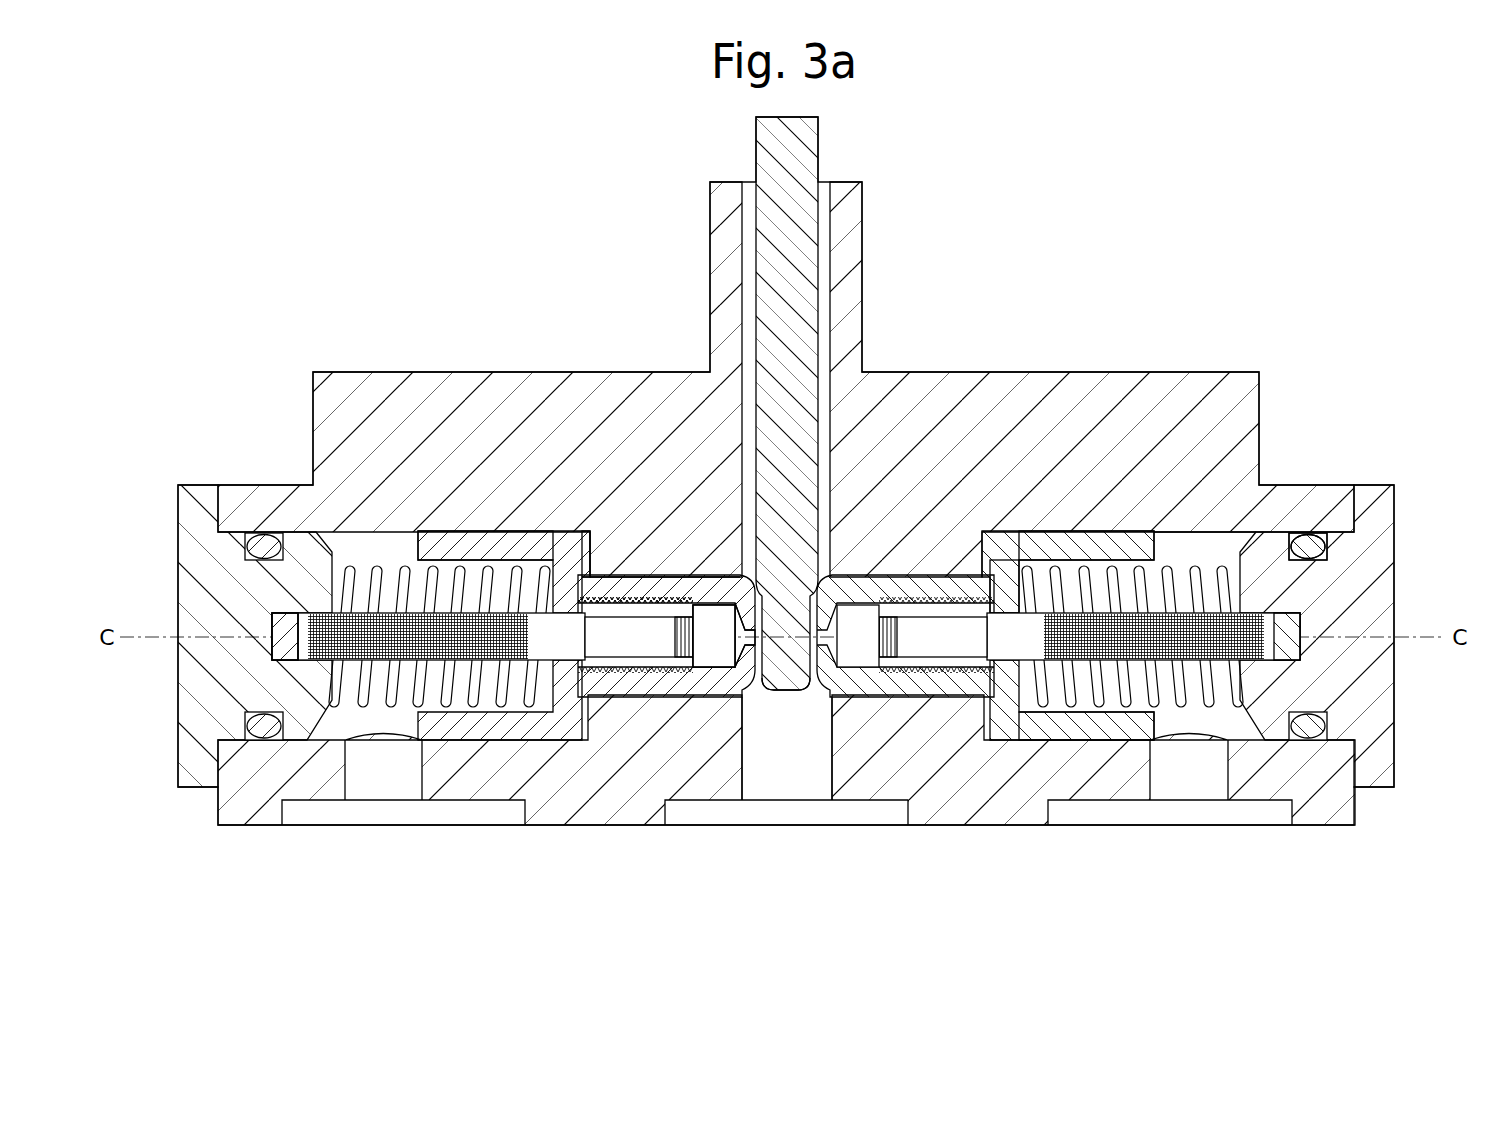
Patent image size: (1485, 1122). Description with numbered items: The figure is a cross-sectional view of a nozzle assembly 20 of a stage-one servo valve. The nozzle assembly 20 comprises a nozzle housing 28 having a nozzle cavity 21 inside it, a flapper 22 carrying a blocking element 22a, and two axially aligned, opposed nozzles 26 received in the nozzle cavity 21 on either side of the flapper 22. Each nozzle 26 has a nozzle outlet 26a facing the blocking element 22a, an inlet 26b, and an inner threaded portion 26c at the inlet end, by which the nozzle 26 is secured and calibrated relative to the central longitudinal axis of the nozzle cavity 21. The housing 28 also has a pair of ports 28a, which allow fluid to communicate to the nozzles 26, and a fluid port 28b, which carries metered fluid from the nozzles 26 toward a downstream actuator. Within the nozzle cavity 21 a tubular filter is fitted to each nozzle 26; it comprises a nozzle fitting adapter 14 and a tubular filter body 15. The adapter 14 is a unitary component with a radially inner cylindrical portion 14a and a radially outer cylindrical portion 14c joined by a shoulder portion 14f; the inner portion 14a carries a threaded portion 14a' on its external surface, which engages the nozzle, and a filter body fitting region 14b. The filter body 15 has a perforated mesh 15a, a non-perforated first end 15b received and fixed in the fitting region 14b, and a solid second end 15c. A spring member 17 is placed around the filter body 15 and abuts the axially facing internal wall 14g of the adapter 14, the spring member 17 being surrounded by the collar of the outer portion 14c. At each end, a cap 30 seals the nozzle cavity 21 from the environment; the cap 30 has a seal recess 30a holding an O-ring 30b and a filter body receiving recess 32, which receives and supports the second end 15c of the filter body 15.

The nozzle assembly 20 is at (243, 310).
The flapper 22 is at (780, 220).
The blocking element 22a is at (778, 660).
The nozzle housing 28 is at (1075, 385).
The ports 28a is at (400, 790).
The fluid port 28b is at (812, 790).
The nozzle cavity 21 is at (1215, 545).
The cap 30 is at (1360, 610).
The seal recess 30a is at (1345, 535).
The O-ring 30b is at (1303, 540).
The filter body receiving recess 32 is at (1300, 648).
The nozzle fitting adapter 14 is at (472, 526).
The radially inner cylindrical portion 14a is at (571, 444).
The threaded portion 14a' is at (665, 455).
The filter body fitting region 14b is at (1000, 612).
The radially outer cylindrical portion 14c is at (415, 540).
The shoulder portion 14f is at (1000, 575).
The axially facing internal wall 14g is at (1035, 660).
The tubular filter body 15 is at (466, 670).
The mesh 15a is at (325, 660).
The first end 15b is at (590, 600).
The second end 15c is at (305, 648).
The spring member 17 is at (345, 578).
The nozzles 26 is at (653, 700).
The nozzle outlets 26a is at (712, 650).
The inlets 26b is at (735, 650).
The inner threaded portion 26c is at (600, 600).